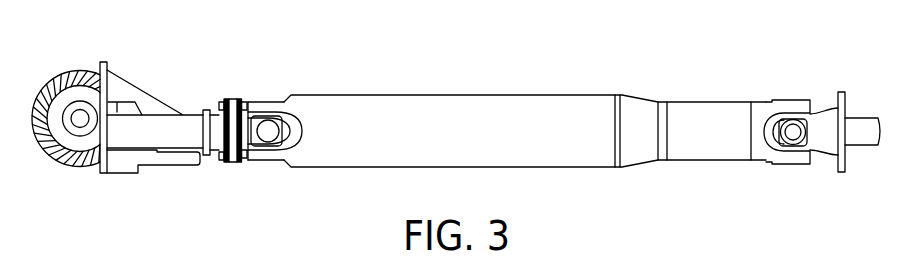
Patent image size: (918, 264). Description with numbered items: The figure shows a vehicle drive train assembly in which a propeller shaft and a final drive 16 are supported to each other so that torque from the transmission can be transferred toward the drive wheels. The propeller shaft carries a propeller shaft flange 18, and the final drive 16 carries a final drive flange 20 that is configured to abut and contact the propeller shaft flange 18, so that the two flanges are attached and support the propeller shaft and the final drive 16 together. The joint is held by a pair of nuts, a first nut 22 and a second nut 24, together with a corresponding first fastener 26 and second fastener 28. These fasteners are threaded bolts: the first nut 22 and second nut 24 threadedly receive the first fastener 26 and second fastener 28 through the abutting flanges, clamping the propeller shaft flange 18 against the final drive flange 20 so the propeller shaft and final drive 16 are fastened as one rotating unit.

The final drive 16 is at (133, 78).
The propeller shaft flange 18 is at (239, 98).
The final drive flange 20 is at (231, 98).
The nut 22 is at (250, 101).
The second nut 24 is at (243, 160).
The first fastener 26 is at (220, 103).
The second fastener 28 is at (221, 160).